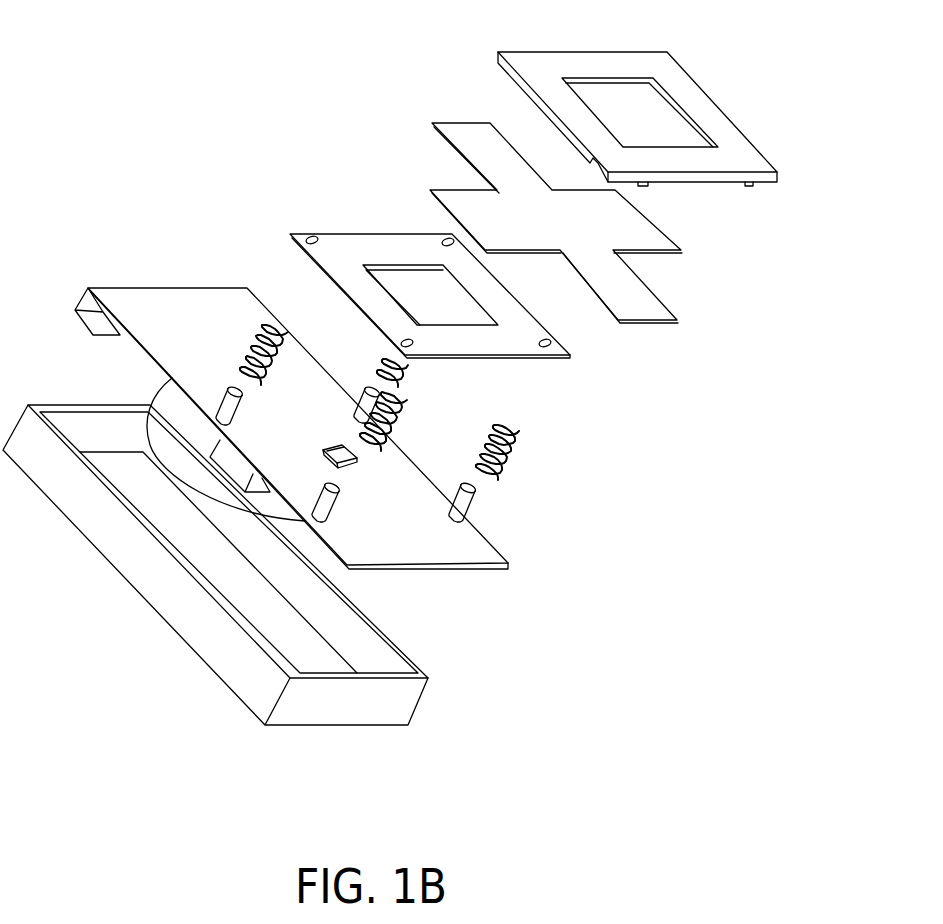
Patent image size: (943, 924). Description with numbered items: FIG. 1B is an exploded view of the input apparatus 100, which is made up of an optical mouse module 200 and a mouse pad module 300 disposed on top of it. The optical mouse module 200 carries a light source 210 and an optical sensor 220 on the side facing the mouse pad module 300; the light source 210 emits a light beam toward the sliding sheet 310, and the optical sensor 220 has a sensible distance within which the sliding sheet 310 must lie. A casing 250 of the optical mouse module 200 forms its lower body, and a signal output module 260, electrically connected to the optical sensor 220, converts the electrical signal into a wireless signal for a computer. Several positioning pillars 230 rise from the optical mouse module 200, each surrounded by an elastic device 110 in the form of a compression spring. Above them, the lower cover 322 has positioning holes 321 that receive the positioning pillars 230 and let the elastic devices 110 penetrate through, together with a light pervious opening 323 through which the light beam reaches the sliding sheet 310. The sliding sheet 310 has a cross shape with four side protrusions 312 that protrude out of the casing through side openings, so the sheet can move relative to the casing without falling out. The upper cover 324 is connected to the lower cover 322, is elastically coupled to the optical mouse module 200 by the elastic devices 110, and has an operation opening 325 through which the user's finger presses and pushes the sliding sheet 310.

The input apparatus 100 is at (662, 703).
The elastic device 110 is at (509, 453).
The optical mouse module 200 is at (192, 270).
The light source 210 is at (337, 461).
The optical sensor 220 is at (358, 456).
The positioning pillar 230 is at (464, 508).
The casing 250 is at (92, 518).
The signal output module 260 is at (88, 312).
The mouse pad module 300 is at (638, 120).
The sliding sheet 310 is at (568, 231).
The side protrusion 312 is at (468, 125).
The positioning hole 321 is at (311, 239).
The lower cover 322 is at (422, 299).
The light pervious opening 323 is at (397, 268).
The upper cover 324 is at (740, 160).
The operation opening 325 is at (608, 82).